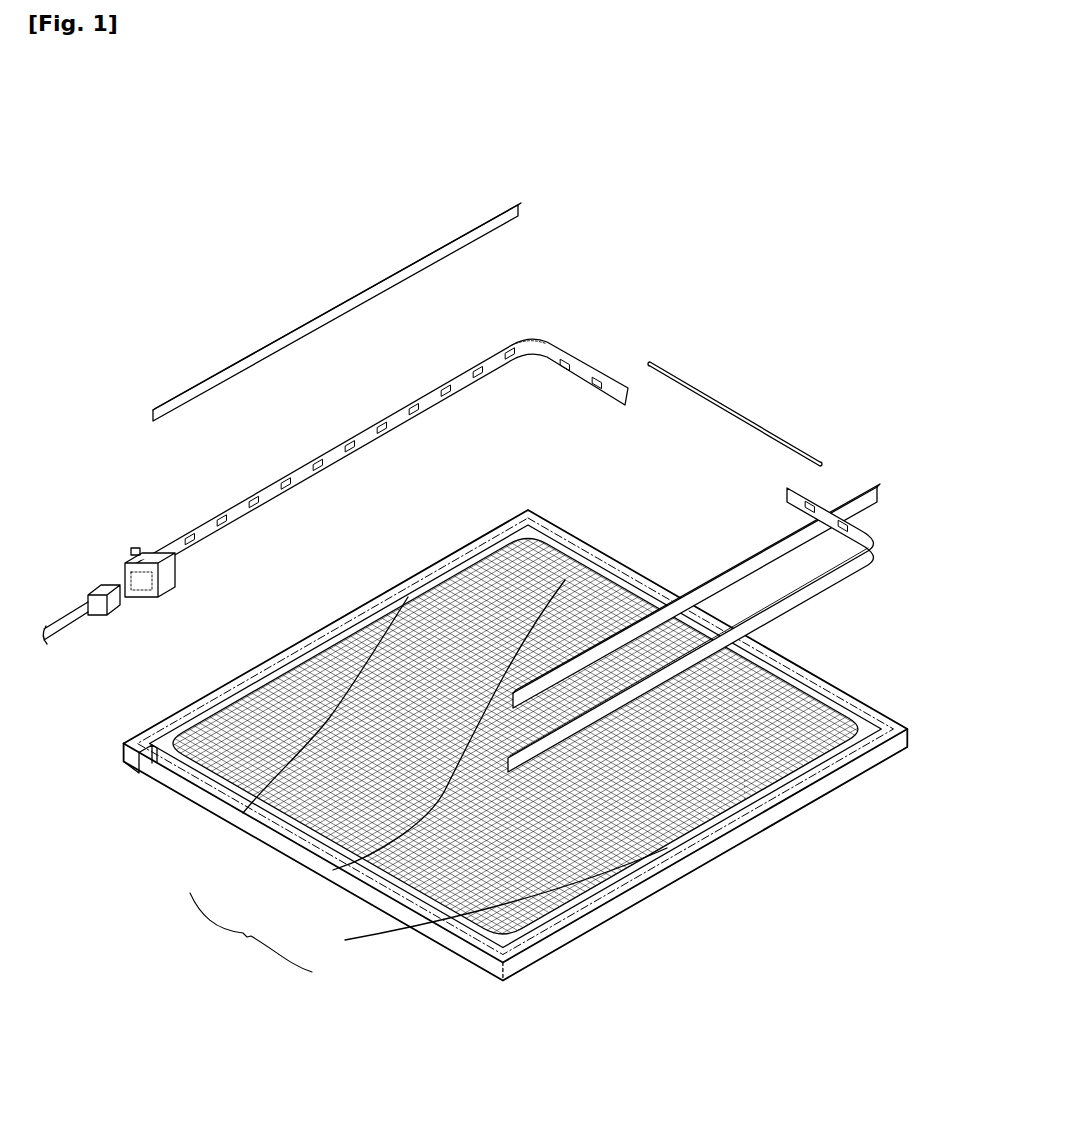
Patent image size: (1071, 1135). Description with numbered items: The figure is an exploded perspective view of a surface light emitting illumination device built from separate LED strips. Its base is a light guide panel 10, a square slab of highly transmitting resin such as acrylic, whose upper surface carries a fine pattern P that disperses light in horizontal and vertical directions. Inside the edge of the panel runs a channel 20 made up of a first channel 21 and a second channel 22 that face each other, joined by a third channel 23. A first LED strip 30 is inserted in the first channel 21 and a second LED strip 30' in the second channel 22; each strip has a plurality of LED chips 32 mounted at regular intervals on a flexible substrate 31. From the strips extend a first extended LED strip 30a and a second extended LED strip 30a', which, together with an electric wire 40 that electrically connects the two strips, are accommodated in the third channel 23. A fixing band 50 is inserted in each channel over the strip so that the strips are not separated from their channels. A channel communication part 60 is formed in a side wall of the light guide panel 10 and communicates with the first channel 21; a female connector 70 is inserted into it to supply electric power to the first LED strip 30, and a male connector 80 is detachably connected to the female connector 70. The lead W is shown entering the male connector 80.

The light guide panel 10 is at (232, 776).
The channel 20 is at (251, 933).
The first channel 21 is at (243, 813).
The second channel 22 is at (345, 940).
The third channel 23 is at (333, 870).
The first LED strip 30 is at (381, 431).
The first extended LED strip 30a is at (604, 337).
The second LED strip 30' is at (713, 630).
The second extended LED strip 30a' is at (842, 473).
The flexible substrate 31 is at (300, 465).
The LED chips 32 is at (348, 437).
The electric wire 40 is at (730, 405).
The first fixing band 50 is at (524, 199).
The channel communication part 60 is at (132, 767).
The female connector 70 is at (164, 593).
The male connector 80 is at (114, 621).
The wire W is at (65, 632).
The fine pattern P is at (733, 778).